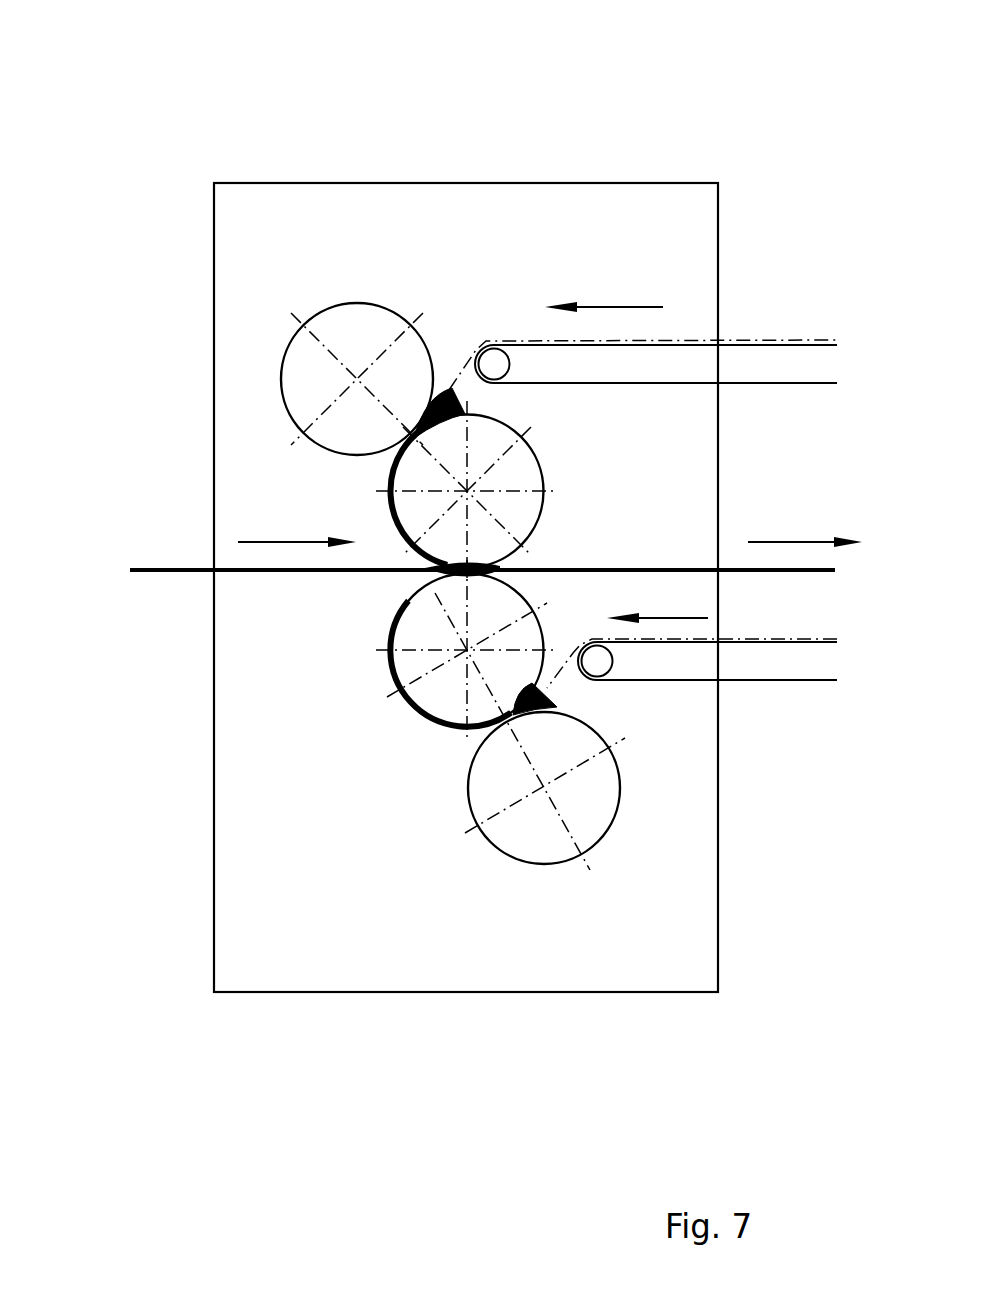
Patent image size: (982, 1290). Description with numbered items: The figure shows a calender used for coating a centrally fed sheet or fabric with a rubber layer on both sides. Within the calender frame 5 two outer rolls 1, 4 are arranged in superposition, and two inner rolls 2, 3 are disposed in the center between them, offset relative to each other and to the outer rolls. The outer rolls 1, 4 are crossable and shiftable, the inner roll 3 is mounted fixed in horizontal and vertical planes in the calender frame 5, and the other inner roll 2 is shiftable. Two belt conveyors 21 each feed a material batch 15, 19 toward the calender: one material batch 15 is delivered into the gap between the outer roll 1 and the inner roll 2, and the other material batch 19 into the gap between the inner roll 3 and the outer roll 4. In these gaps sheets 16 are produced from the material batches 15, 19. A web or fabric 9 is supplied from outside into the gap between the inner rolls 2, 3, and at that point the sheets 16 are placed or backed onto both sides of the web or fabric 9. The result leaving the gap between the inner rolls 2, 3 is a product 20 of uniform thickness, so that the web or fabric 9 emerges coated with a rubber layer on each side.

The outer roll 1 is at (348, 325).
The inner roll 2 is at (413, 475).
The inner roll 3 is at (440, 702).
The outer roll 4 is at (507, 790).
The calender frame 5 is at (330, 938).
The web or fabric 9 is at (187, 562).
The material batch 15 is at (449, 388).
The sheet 16 is at (390, 530).
The material batch 19 is at (557, 703).
The uniform thickness product 20 is at (623, 565).
The belt conveyor 21 is at (750, 358).